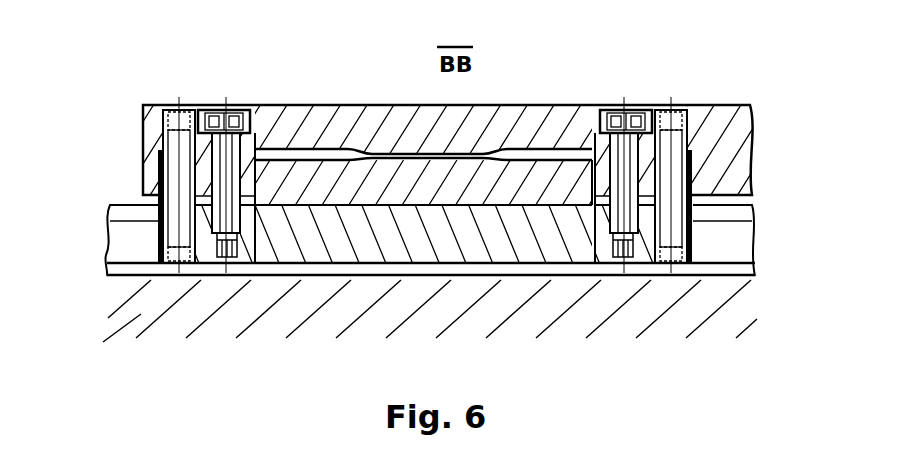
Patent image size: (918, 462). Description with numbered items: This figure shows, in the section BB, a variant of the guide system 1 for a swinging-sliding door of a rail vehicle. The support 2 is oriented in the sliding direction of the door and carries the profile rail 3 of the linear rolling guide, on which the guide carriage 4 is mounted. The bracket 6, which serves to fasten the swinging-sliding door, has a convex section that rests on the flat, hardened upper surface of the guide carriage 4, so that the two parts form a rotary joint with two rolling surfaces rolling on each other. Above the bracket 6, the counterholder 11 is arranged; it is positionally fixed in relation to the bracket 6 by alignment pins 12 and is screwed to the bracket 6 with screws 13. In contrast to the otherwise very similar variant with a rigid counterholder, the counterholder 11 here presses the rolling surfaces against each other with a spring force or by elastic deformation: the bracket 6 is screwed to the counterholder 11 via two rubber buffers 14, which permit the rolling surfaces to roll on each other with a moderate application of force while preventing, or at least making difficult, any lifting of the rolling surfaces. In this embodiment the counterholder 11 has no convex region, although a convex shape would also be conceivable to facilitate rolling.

The guide system 1 is at (697, 62).
The support 2 is at (417, 317).
The profile rail 3 is at (127, 238).
The guide carriage 4 is at (363, 168).
The bracket 6 is at (742, 143).
The counterholder 11 is at (378, 268).
The alignment pin 12 is at (143, 193).
The screw 13 is at (203, 108).
The rubber buffer 14 is at (183, 162).